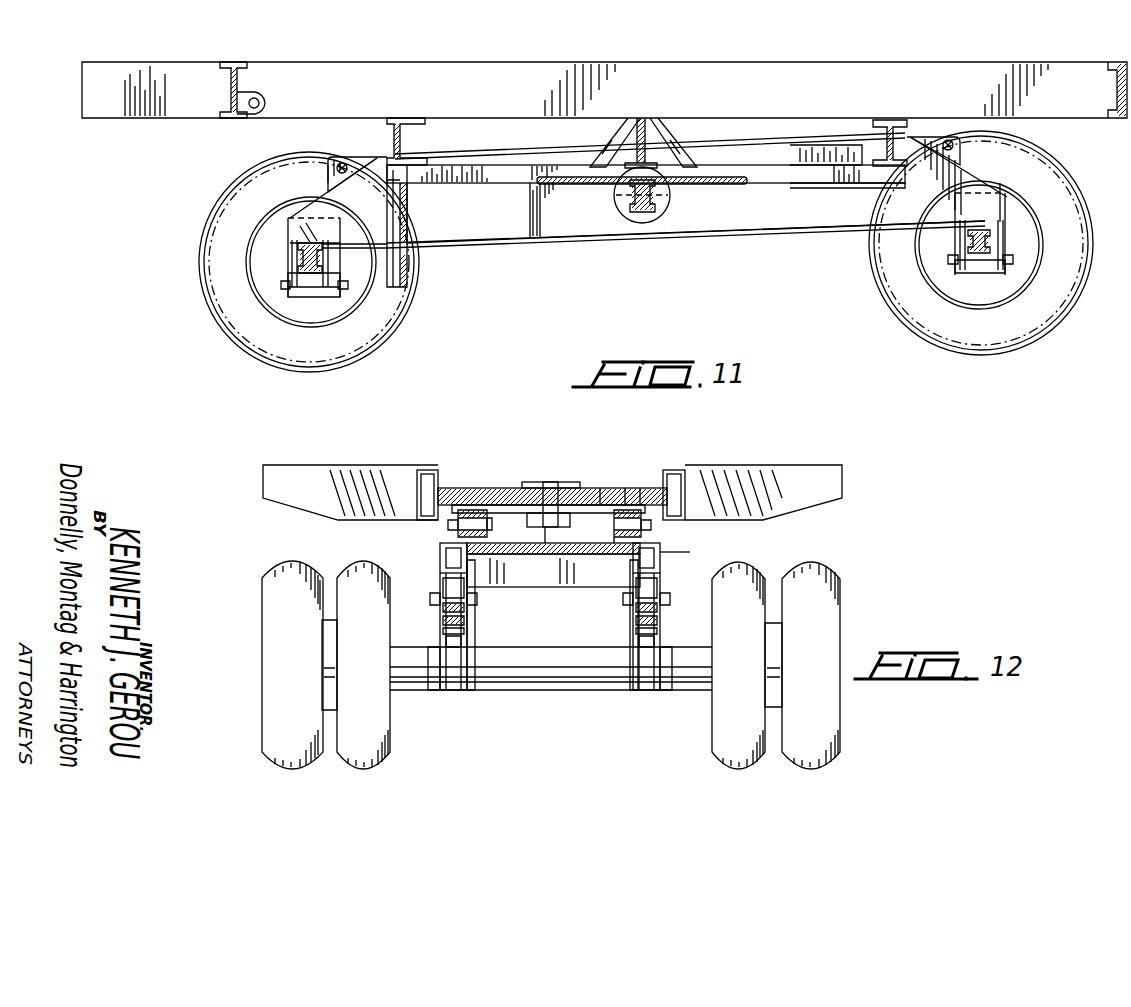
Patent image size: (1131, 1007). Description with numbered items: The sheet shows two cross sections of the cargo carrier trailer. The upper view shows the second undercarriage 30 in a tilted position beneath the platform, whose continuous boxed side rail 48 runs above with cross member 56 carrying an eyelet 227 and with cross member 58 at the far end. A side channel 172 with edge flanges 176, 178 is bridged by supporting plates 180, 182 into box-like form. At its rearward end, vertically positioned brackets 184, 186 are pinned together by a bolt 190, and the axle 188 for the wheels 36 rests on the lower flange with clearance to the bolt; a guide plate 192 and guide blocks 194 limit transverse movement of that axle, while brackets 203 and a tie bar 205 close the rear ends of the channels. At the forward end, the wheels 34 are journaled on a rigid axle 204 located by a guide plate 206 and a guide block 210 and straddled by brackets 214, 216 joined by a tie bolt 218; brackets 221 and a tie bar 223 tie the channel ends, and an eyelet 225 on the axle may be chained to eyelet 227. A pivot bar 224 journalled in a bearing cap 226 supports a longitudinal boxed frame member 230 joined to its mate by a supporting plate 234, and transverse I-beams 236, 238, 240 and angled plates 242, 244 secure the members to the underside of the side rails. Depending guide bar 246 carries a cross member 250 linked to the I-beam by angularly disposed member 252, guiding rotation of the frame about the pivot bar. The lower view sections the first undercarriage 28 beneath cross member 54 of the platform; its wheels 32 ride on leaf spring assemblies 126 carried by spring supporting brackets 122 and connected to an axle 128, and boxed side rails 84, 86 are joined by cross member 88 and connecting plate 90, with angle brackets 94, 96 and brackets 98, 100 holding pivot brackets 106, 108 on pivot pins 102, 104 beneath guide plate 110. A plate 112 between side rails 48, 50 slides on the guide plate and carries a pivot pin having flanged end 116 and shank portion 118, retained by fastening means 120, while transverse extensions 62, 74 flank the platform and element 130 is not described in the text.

In FIG. 12, the first undercarriage 28 is at (688, 549).
In FIG. 11, the second undercarriage 30 is at (480, 152).
In FIG. 12, the road engaging wheels 32 is at (380, 722).
In FIG. 11, the road engaging wheels 34 is at (203, 300).
In FIG. 11, the road engaging wheels 36 is at (1068, 300).
In FIG. 11, the side rail 48 is at (800, 72).
In FIG. 12, the side rail 48 is at (428, 470).
In FIG. 12, the side rail 50 is at (680, 470).
In FIG. 12, the transverse cross member 54 is at (466, 470).
In FIG. 11, the transverse cross member 56 is at (230, 78).
In FIG. 11, the transverse cross member 58 is at (1118, 68).
In FIG. 12, the transverse extension 62 is at (330, 468).
In FIG. 12, the transverse extension 74 is at (800, 470).
In FIG. 12, the side rail 84 is at (460, 575).
In FIG. 12, the side rail 86 is at (637, 560).
In FIG. 12, the transverse cross member 88 is at (570, 560).
In FIG. 12, the connecting plate 90 is at (563, 557).
In FIG. 12, the angle bracket 94 is at (660, 546).
In FIG. 12, the angle bracket 96 is at (612, 525).
In FIG. 12, the bracket 98 is at (452, 530).
In FIG. 12, the bracket 100 is at (492, 535).
In FIG. 12, the pivot pin 102 is at (651, 526).
In FIG. 12, the pivot pin 104 is at (458, 522).
In FIG. 12, the pivot bracket 106 is at (618, 490).
In FIG. 12, the pivot bracket 108 is at (466, 505).
In FIG. 12, the guide plate 110 is at (626, 488).
In FIG. 12, the plate 112 is at (598, 488).
In FIG. 12, the flanged end 116 is at (545, 488).
In FIG. 12, the shank portion 118 is at (552, 482).
In FIG. 12, the releasable fastening means 120 is at (546, 545).
In FIG. 12, the spring supporting brackets 122 is at (440, 575).
In FIG. 12, the leaf spring assembly 126 is at (446, 640).
In FIG. 12, the axle 128 is at (535, 678).
In FIG. 12, the plate 130 is at (476, 650).
In FIG. 11, the side channel 172 is at (800, 226).
In FIG. 11, the edge flange 176 is at (760, 240).
In FIG. 11, the edge flange 178 is at (800, 152).
In FIG. 11, the supporting plate 180 is at (865, 187).
In FIG. 11, the supporting plate 182 is at (422, 189).
In FIG. 11, the vertically positioned bracket 184 is at (990, 240).
In FIG. 11, the vertically positioned bracket 186 is at (962, 250).
In FIG. 11, the axle 188 is at (1003, 245).
In FIG. 11, the bolt 190 is at (980, 275).
In FIG. 11, the guide plate 192 is at (970, 272).
In FIG. 11, the guide blocks 194 is at (982, 234).
In FIG. 11, the brackets 203 is at (966, 160).
In FIG. 11, the axle 204 is at (298, 255).
In FIG. 11, the tie bar 205 is at (955, 145).
In FIG. 11, the guide plate 206 is at (322, 300).
In FIG. 11, the guide block 210 is at (318, 240).
In FIG. 11, the bracket 214 is at (292, 268).
In FIG. 11, the bracket 216 is at (340, 280).
In FIG. 11, the tie bolt 218 is at (305, 292).
In FIG. 11, the brackets 221 is at (328, 175).
In FIG. 11, the tie bar 223 is at (340, 165).
In FIG. 11, the pivot bar 224 is at (655, 205).
In FIG. 11, the eyelet 225 is at (304, 228).
In FIG. 11, the bearing cap 226 is at (668, 195).
In FIG. 11, the eyelet 227 is at (260, 95).
In FIG. 11, the boxed frame member 230 is at (515, 188).
In FIG. 11, the supporting plate 234 is at (570, 187).
In FIG. 11, the I-beam member 236 is at (394, 132).
In FIG. 11, the I-beam member 238 is at (642, 117).
In FIG. 11, the I-beam member 240 is at (892, 124).
In FIG. 11, the plate 242 is at (612, 140).
In FIG. 11, the plate 244 is at (672, 140).
In FIG. 11, the guide bar 246 is at (410, 248).
In FIG. 11, the cross member 250 is at (410, 285).
In FIG. 11, the angularly disposed member 252 is at (398, 180).